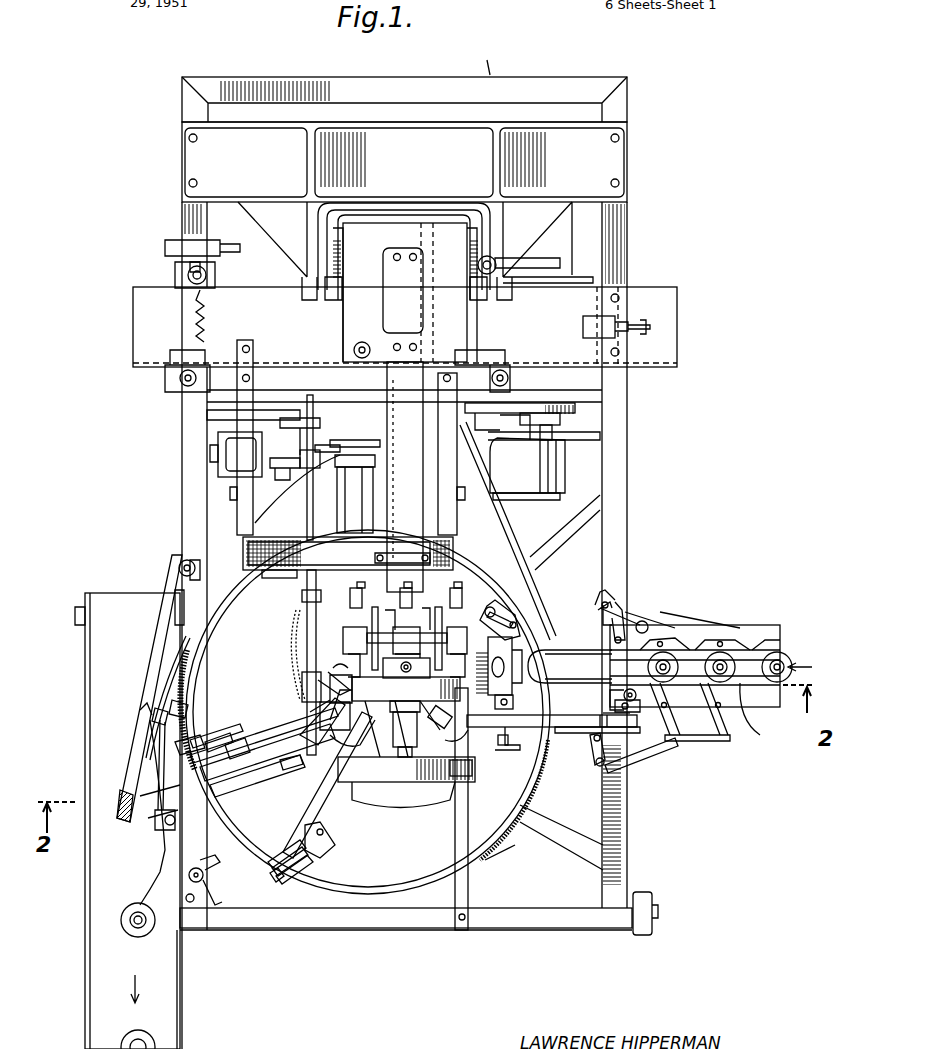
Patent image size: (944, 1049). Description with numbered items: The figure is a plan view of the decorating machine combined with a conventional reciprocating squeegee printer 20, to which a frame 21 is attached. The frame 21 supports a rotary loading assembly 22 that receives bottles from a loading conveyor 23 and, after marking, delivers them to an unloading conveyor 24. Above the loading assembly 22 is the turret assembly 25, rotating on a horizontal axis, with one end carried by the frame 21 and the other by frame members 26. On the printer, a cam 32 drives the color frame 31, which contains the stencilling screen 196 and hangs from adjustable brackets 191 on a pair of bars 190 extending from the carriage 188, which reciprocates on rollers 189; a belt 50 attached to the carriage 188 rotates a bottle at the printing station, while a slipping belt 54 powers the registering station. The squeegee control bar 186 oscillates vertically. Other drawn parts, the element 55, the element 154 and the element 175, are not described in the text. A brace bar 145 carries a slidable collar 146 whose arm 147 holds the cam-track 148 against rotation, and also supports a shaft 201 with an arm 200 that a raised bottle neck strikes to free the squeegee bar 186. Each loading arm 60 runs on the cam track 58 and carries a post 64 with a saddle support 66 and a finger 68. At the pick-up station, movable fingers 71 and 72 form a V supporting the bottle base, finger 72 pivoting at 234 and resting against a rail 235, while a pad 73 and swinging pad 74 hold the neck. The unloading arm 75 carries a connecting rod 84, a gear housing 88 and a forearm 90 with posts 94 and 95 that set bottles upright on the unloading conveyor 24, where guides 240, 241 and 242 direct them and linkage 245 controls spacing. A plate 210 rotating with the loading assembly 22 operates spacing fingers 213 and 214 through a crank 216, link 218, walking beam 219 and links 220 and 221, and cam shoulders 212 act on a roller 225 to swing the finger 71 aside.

The reciprocating squeegee printer 20 is at (697, 337).
The frame 21 is at (618, 806).
The rotary loading assembly 22 is at (511, 876).
The loading conveyor 23 is at (762, 700).
The unloading conveyor 24 is at (80, 696).
The turret assembly 25 is at (477, 591).
The frame members 26 is at (443, 778).
The color frame 31 is at (262, 572).
The cam 32 is at (553, 403).
The belt 50 is at (215, 405).
The belt 54 is at (302, 430).
The switch box 55 is at (218, 465).
The cam track 58 is at (345, 882).
The loading arm 60 is at (327, 806).
The post 64 is at (324, 830).
The saddle support 66 is at (290, 855).
The finger 68 is at (300, 868).
The movable finger 71 is at (618, 635).
The movable finger 72 is at (613, 700).
The pad 73 is at (480, 668).
The swinging pad 74 is at (525, 663).
The unloading arm 75 is at (320, 725).
The connecting rod 84 is at (272, 768).
The gear housing 88 is at (270, 790).
The forearm 90 is at (228, 742).
The post 94 is at (245, 750).
The post 95 is at (212, 742).
The brace bar 145 is at (310, 650).
The collar 146 is at (308, 677).
The arm 147 is at (303, 690).
The cam-track 148 is at (375, 695).
The fitting 154 is at (348, 638).
The lever 175 is at (302, 480).
The squeegee control bar 186 is at (408, 470).
The carriage 188 is at (133, 313).
The rollers 189 is at (205, 268).
The bars 190 is at (438, 497).
The adjustable brackets 191 is at (252, 357).
The stencilling screen 196 is at (290, 555).
The arm 200 is at (345, 600).
The shaft 201 is at (325, 523).
The plate 210 is at (305, 634).
The cam shoulders 212 is at (393, 792).
The spacing finger 213 is at (678, 738).
The spacing finger 214 is at (735, 728).
The crank 216 is at (507, 745).
The link 218 is at (590, 746).
The walking beam 219 is at (595, 768).
The link 220 is at (640, 752).
The link 221 is at (700, 736).
The roller 225 is at (742, 640).
The pivot 234 is at (632, 707).
The rail 235 is at (762, 690).
The guide 240 is at (165, 676).
The guide 241 is at (150, 650).
The guide 242 is at (155, 847).
The linkage 245 is at (163, 832).